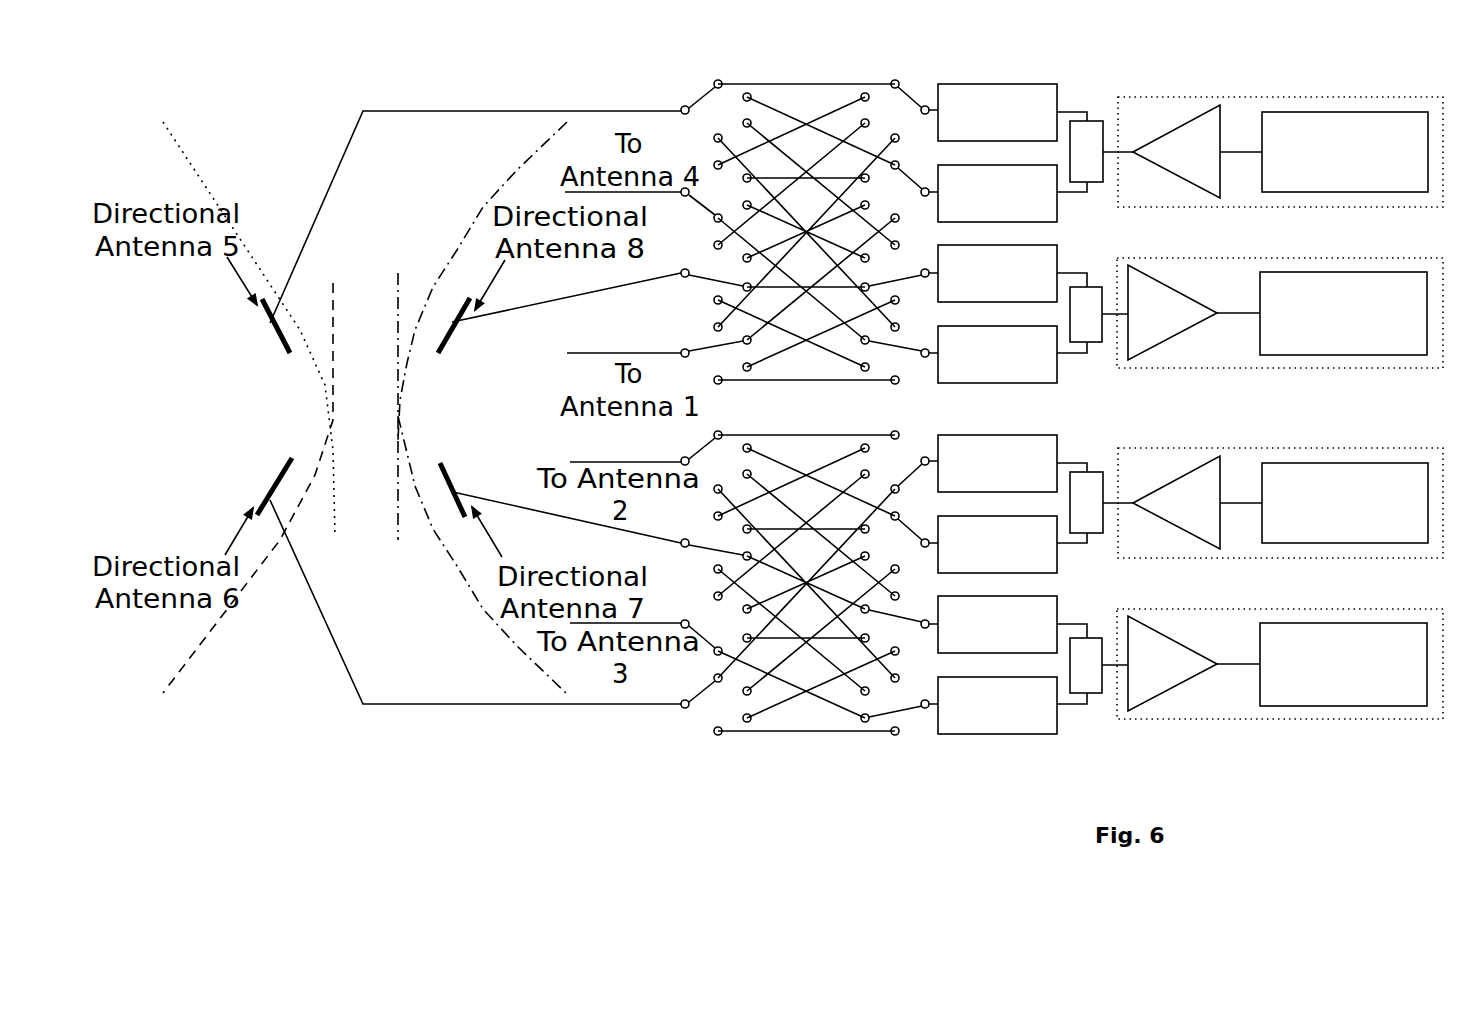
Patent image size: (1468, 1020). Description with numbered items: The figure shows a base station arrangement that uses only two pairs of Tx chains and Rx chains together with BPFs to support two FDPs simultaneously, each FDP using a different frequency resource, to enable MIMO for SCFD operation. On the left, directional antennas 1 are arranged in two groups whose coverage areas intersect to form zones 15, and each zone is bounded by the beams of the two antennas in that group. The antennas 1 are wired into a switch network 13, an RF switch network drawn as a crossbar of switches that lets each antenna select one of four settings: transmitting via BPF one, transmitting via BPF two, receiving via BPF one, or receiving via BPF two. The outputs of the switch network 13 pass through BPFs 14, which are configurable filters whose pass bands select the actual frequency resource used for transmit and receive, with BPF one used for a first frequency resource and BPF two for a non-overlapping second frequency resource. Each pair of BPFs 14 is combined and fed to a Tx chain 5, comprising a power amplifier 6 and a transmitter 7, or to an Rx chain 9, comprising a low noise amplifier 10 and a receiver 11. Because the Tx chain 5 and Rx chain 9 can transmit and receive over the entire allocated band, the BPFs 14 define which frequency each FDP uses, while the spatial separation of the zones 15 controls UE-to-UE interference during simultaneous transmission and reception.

The antennas 1 is at (363, 407).
The Tx chain 5 is at (1280, 312).
The power amplifier (PA) 6 is at (1176, 328).
The transmitter 7 is at (1345, 327).
The Rx chain 9 is at (1280, 505).
The low noise amplifier (LNA) 10 is at (1172, 490).
The receiver 11 is at (1343, 489).
The switch network 13 is at (810, 427).
The BPFs 14 is at (993, 409).
The zones 15 is at (365, 408).